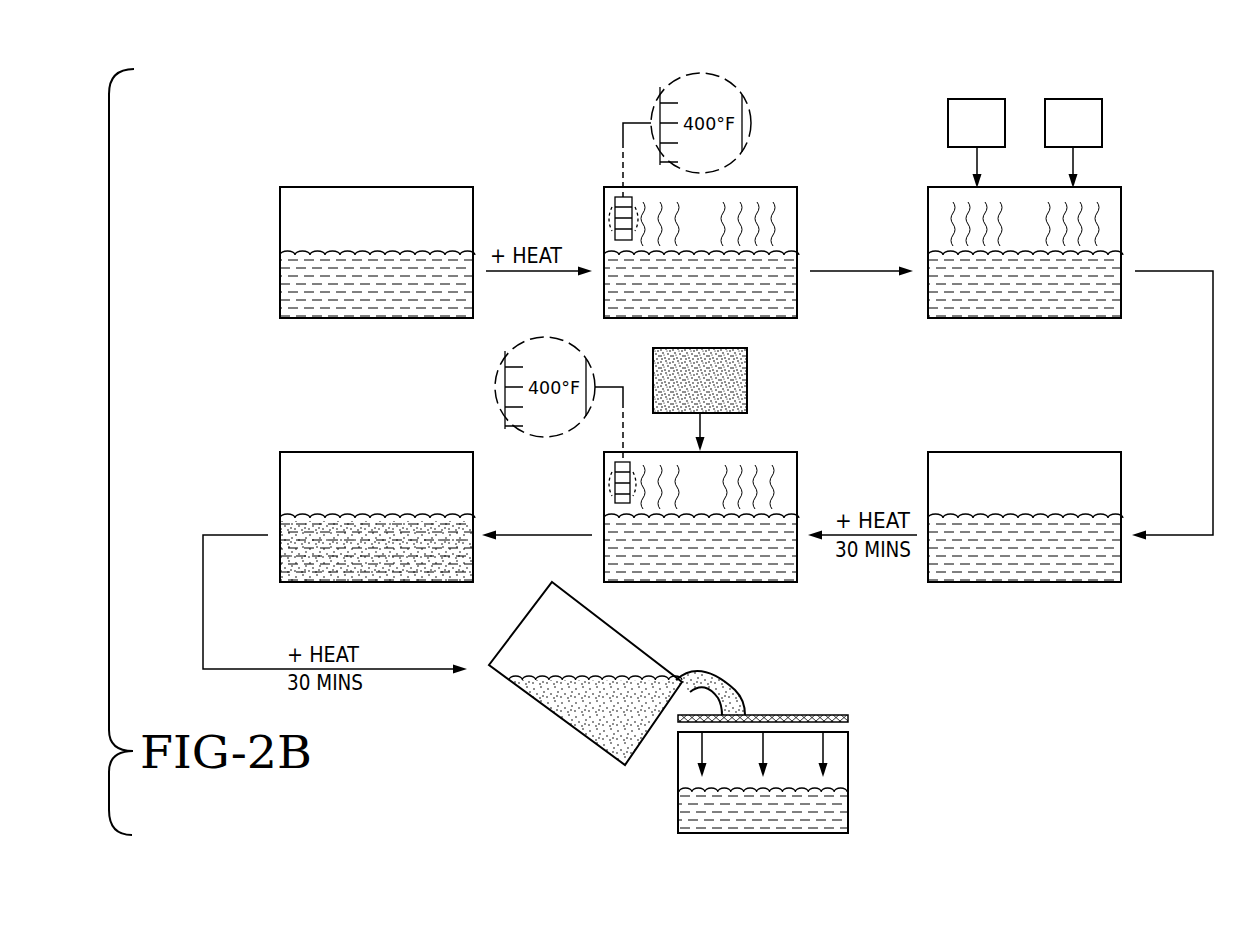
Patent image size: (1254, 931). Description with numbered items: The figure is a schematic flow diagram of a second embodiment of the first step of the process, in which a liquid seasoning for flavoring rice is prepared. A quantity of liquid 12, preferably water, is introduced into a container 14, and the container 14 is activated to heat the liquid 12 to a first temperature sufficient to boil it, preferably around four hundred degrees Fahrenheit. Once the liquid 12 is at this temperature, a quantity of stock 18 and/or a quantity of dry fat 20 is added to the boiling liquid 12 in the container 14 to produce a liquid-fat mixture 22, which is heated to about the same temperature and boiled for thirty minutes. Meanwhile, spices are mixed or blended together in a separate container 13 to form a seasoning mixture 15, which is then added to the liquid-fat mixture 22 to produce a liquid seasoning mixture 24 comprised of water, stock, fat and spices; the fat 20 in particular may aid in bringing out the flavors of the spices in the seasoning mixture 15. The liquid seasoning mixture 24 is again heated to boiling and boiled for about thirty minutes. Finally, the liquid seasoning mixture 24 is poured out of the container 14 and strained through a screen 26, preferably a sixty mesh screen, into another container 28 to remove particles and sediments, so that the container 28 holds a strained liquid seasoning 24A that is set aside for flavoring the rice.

The liquid 12 is at (373, 272).
The separate container 13 is at (720, 415).
The container 14 is at (280, 220).
The seasoning mixture 15 is at (728, 378).
The stock 18 is at (956, 120).
The dry fat 20 is at (1093, 120).
The liquid-fat mixture 22 is at (700, 537).
The liquid seasoning mixture 24 is at (375, 535).
The strained liquid seasoning 24A is at (735, 803).
The screen 26 is at (810, 715).
The container 28 is at (848, 758).